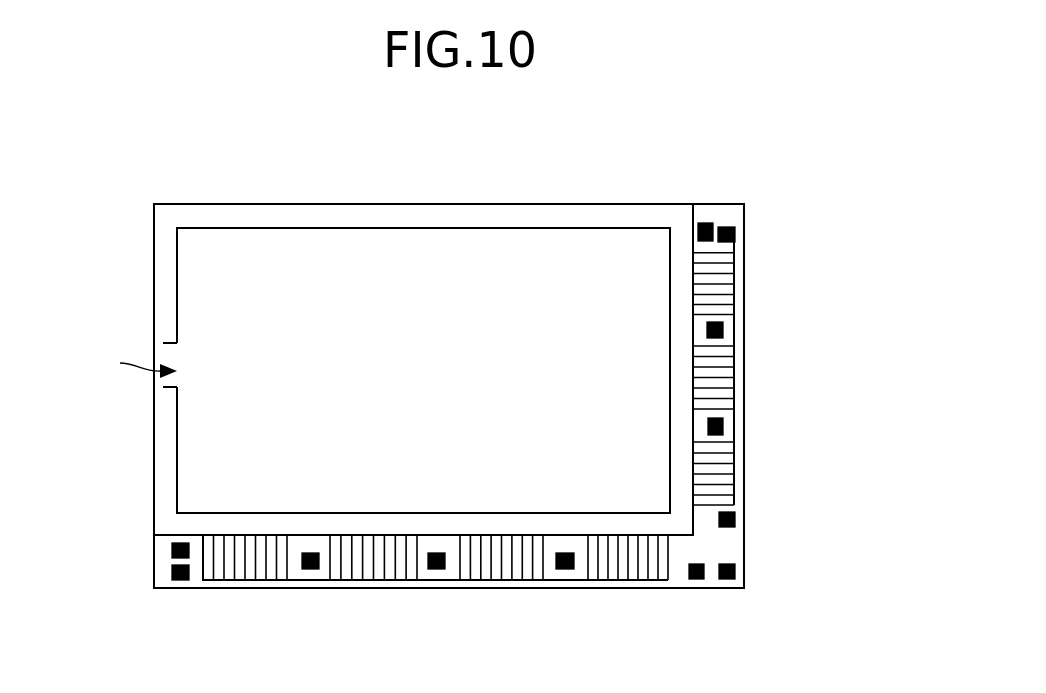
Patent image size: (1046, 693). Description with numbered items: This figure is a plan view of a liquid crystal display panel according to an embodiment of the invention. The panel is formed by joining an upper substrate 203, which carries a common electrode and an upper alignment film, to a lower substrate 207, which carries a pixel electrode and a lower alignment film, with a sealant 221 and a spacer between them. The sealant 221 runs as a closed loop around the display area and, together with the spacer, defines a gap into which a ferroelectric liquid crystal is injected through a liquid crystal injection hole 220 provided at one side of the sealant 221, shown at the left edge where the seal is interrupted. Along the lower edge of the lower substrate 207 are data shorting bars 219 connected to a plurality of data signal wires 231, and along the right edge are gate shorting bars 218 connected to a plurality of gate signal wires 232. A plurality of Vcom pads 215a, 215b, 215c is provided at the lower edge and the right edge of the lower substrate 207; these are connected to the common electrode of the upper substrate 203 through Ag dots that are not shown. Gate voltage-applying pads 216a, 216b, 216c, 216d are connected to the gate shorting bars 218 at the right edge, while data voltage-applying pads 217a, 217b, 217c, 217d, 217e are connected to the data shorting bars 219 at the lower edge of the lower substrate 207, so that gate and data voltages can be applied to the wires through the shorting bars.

The upper substrate 203 is at (170, 535).
The lower substrate 207 is at (340, 588).
The Vcom pad 215a is at (170, 550).
The Vcom pad 215b is at (737, 578).
The Vcom pad 215c is at (713, 222).
The gate voltage-applying pad 216a is at (737, 232).
The gate voltage-applying pad 216b is at (722, 325).
The gate voltage-applying pad 216c is at (722, 422).
The gate voltage-applying pad 216d is at (737, 518).
The data voltage-applying pad 217a is at (178, 580).
The data voltage-applying pad 217b is at (302, 570).
The data voltage-applying pad 217c is at (432, 570).
The data voltage-applying pad 217d is at (562, 570).
The data voltage-applying pad 217e is at (698, 580).
The gate shorting bars 218 is at (737, 287).
The data shorting bars 219 is at (495, 580).
The liquid crystal injection hole 220 is at (127, 367).
The sealant 221 is at (262, 227).
The data signal wires 231 is at (665, 572).
The gate signal wires 232 is at (725, 460).